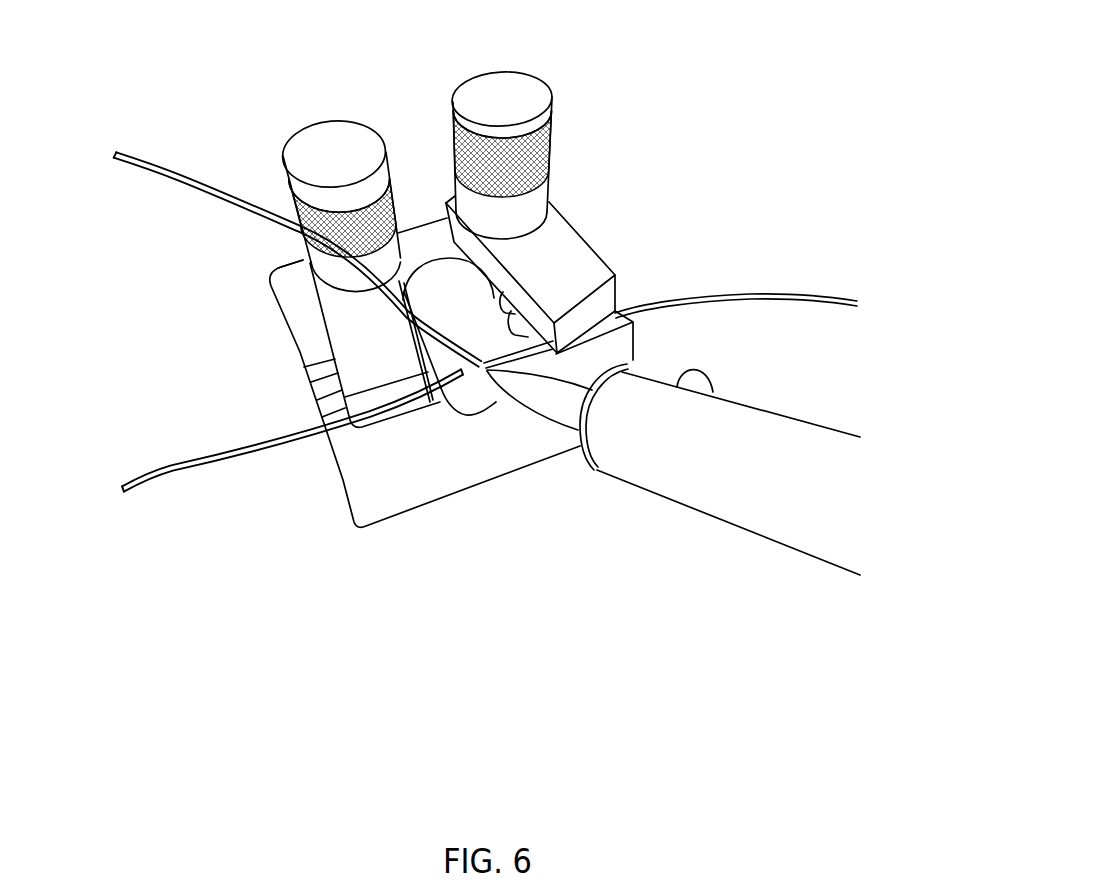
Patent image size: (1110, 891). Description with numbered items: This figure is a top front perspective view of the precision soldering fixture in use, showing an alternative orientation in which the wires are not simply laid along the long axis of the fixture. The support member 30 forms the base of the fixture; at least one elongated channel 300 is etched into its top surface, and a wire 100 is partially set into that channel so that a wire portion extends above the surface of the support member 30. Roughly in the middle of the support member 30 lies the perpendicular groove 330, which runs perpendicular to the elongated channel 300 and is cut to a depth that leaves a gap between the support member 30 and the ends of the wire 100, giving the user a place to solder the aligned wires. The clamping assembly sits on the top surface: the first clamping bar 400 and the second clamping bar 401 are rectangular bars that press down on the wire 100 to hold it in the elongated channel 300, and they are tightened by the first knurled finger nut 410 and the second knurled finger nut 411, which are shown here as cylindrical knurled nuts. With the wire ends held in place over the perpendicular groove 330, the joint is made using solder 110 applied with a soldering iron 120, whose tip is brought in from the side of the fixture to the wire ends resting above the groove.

The support member 30 is at (352, 508).
The wire 100 is at (163, 468).
The solder 110 is at (157, 177).
The soldering iron 120 is at (737, 527).
The elongated channel 300 is at (313, 366).
The perpendicular groove 330 is at (463, 393).
The first clamping bar 400 is at (280, 327).
The second clamping bar 401 is at (613, 270).
The first knurled finger nut 410 is at (313, 122).
The second knurled finger nut 411 is at (467, 80).